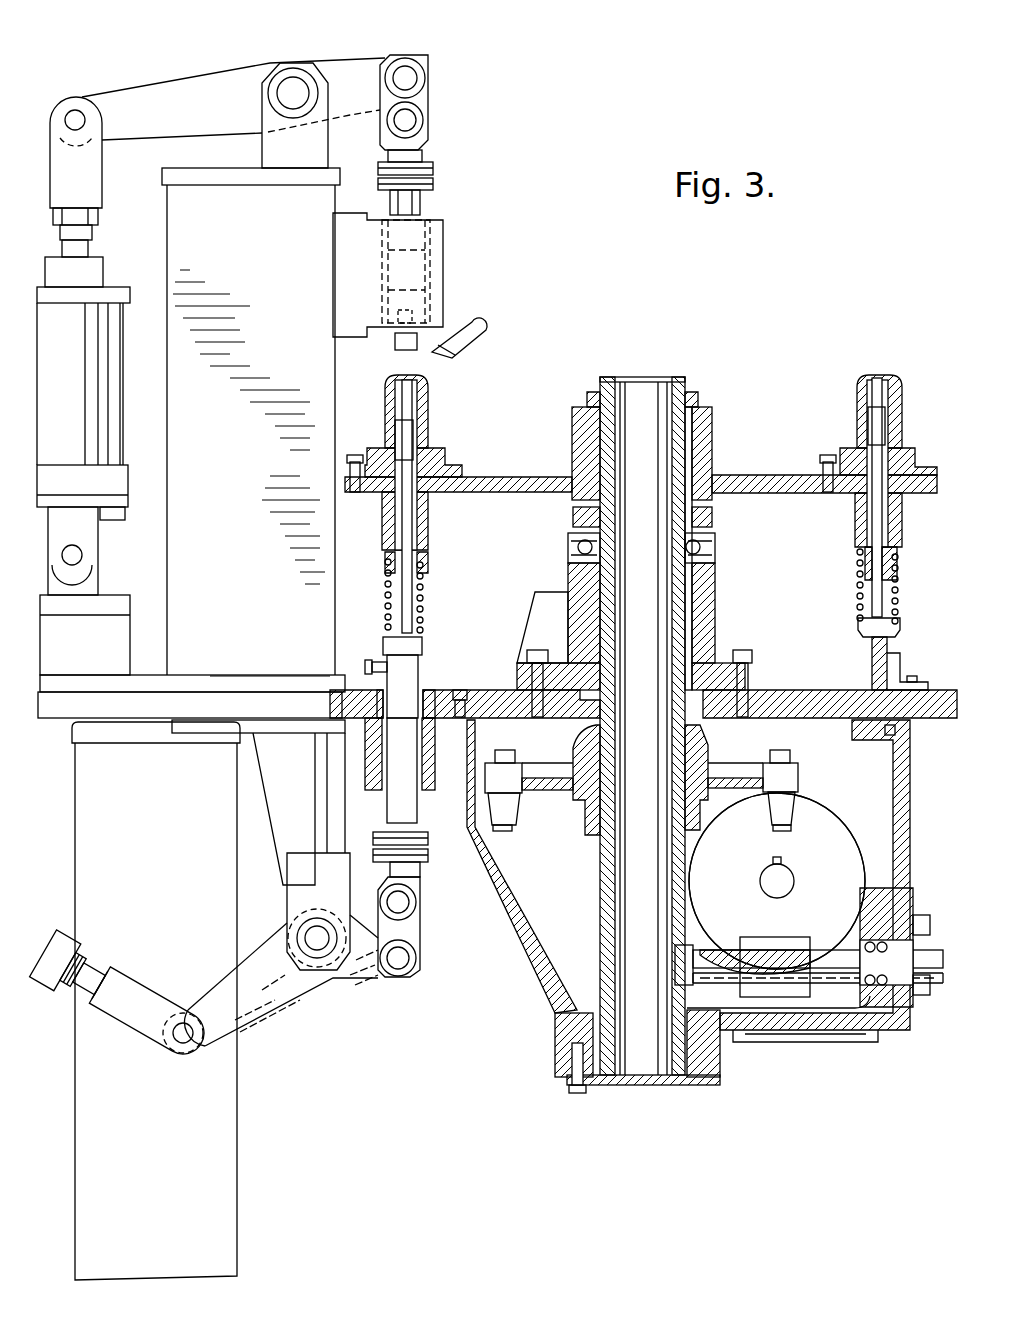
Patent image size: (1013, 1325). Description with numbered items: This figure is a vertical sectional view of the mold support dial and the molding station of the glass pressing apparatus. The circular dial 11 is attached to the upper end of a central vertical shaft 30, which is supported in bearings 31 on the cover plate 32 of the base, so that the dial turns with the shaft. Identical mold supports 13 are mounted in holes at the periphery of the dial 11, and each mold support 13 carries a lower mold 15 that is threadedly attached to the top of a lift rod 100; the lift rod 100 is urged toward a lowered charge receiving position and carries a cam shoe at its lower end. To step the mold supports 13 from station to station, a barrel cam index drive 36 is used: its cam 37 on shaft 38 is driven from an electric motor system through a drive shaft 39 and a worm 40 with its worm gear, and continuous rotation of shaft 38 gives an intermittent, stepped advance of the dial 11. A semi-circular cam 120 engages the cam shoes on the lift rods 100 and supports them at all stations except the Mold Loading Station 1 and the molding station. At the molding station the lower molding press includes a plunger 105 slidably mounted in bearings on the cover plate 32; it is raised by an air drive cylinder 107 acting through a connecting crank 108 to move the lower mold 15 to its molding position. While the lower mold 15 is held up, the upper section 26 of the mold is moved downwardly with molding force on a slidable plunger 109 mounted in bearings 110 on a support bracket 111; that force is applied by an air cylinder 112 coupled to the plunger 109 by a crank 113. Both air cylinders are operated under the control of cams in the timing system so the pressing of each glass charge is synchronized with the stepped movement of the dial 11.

The Mold Loading Station 1 is at (733, 372).
The dial 11 is at (740, 478).
The mold support 13 is at (430, 432).
The lower mold 15 is at (404, 407).
The upper section of the mold 26 is at (395, 340).
The central vertical shaft 30 is at (679, 610).
The bearings 31 is at (715, 532).
The cover plate 32 is at (792, 690).
The barrel cam index drive 36 is at (841, 813).
The cam 37 is at (846, 863).
The shaft 38 is at (760, 882).
The drive shaft 39 is at (930, 960).
The worm 40 is at (758, 997).
The lift rod 100 is at (405, 513).
The plunger 105 is at (408, 694).
The air drive cylinder 107 is at (70, 935).
The connecting crank 108 is at (275, 993).
The slidable plunger 109 is at (422, 206).
The bearings 110 is at (450, 262).
The support bracket 111 is at (275, 255).
The air cylinder 112 is at (80, 340).
The crank 113 is at (372, 60).
The cam 120 is at (872, 652).